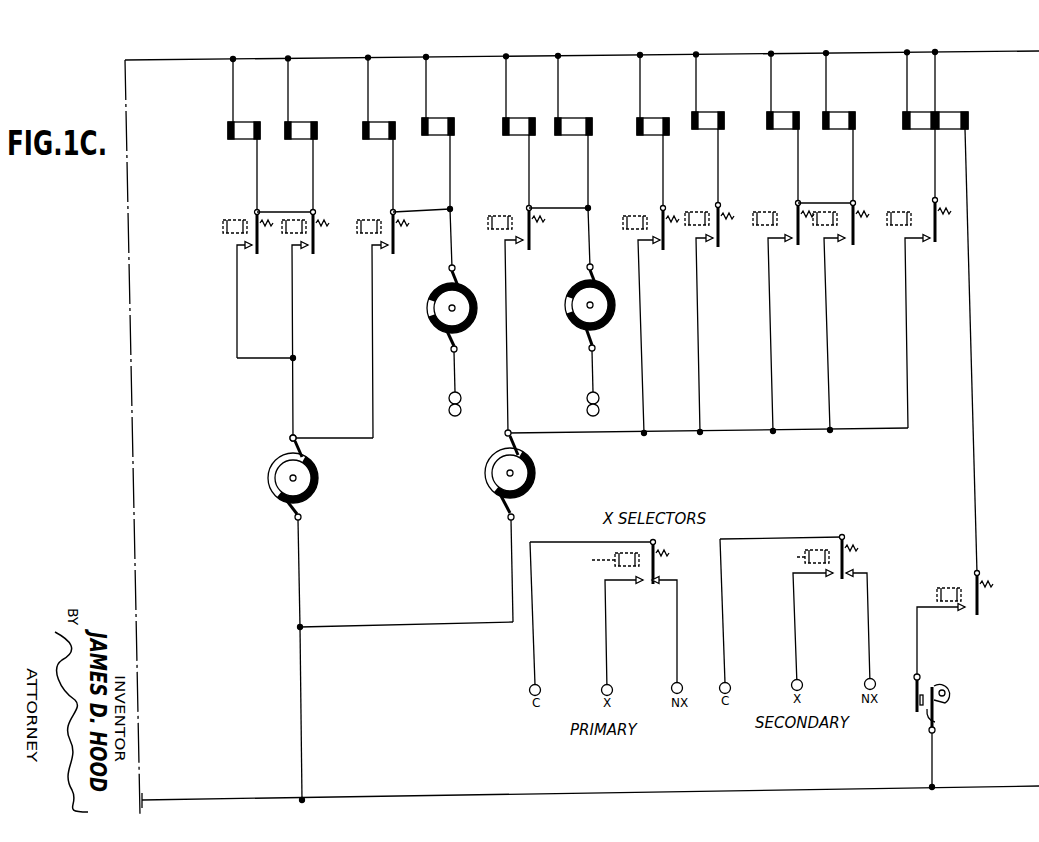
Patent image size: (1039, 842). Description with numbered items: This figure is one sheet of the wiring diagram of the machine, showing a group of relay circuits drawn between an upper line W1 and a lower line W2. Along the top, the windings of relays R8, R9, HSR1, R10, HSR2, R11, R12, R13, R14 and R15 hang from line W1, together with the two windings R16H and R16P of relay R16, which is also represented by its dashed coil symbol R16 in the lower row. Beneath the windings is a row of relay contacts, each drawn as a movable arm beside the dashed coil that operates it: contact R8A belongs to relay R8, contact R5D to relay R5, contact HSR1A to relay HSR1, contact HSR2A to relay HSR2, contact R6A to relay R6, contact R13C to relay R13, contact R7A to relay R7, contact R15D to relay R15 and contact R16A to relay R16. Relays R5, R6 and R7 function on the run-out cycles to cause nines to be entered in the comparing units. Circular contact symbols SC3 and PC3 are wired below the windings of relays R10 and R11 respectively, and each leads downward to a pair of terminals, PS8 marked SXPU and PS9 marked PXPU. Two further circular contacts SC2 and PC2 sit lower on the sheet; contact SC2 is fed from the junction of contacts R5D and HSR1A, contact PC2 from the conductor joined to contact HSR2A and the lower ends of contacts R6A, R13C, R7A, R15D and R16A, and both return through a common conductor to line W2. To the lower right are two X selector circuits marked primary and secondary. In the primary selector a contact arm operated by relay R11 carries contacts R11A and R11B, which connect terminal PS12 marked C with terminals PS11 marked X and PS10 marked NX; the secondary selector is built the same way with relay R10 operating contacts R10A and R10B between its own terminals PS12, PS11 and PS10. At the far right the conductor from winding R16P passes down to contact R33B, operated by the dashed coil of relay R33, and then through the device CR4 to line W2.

The supply wire W1 is at (196, 62).
The supply wire W2 is at (463, 782).
The relay R8 is at (244, 124).
The relay R9 is at (300, 124).
The relay HSR1 is at (384, 124).
The relay R10 is at (440, 120).
The relay HSR2 is at (520, 120).
The relay R11 is at (575, 120).
The relay R12 is at (652, 120).
The relay R13 is at (708, 114).
The relay R14 is at (786, 114).
The relay R15 is at (840, 114).
The relay R16 pickup coil R16P is at (952, 112).
The relay R16 holding coil R16H is at (916, 130).
The relay R5 is at (290, 218).
The relay R6 is at (637, 214).
The relay R7 is at (770, 210).
The relay R16 coil R16 is at (908, 210).
The contact R8A is at (254, 254).
The contact R5D is at (311, 254).
The contact HSR1A is at (391, 254).
The contact HSR2A is at (526, 250).
The contact R6A is at (661, 250).
The contact R13C is at (717, 247).
The contact R7A is at (795, 247).
The contact R15D is at (850, 247).
The contact R16A is at (931, 247).
The coil SC3 is at (430, 316).
The coil PC3 is at (568, 301).
The coil SC2 is at (318, 480).
The coil PC2 is at (535, 475).
The pickup PS8 is at (448, 404).
The pickup PS9 is at (586, 404).
The secondary X pickup SXPU is at (446, 394).
The primary X pickup PXPU is at (593, 393).
The contact R11A is at (651, 589).
The contact R11B is at (656, 600).
The contact R10A is at (840, 587).
The contact R10B is at (849, 598).
The selector terminal PS12 is at (530, 686).
The selector terminal PS11 is at (603, 686).
The selector terminal PS10 is at (673, 684).
The relay R33 coil R33 is at (948, 587).
The contact R33B is at (973, 613).
The relay CR4 is at (935, 721).